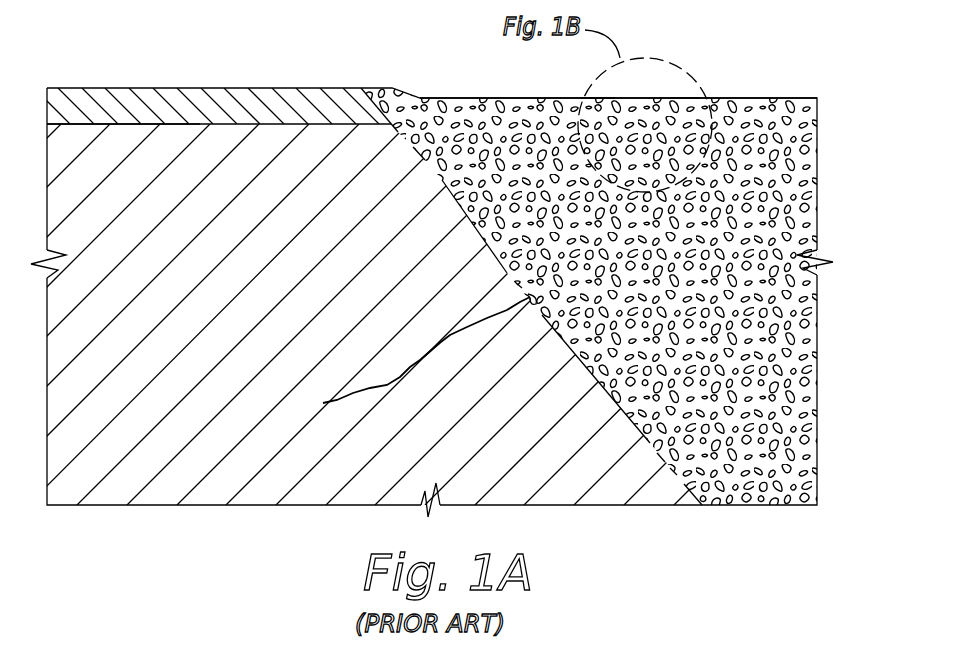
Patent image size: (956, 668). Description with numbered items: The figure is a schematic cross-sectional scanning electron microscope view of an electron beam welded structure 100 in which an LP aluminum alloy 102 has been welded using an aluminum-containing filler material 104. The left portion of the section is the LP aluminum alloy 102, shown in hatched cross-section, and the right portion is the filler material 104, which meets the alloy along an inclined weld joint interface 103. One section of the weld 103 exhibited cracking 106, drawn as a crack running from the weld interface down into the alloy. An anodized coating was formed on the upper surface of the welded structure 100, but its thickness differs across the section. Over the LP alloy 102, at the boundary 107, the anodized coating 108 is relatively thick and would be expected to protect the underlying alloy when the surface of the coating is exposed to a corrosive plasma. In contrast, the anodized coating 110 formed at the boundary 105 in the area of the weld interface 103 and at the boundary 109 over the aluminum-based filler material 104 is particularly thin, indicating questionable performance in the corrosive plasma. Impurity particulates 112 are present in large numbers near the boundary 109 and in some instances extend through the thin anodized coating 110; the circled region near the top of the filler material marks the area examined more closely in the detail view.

The electron beam welded structure 100 is at (760, 20).
The LP aluminum alloy 102 is at (622, 488).
The weld joint interface 103 is at (458, 200).
The 4047 aluminum-containing filler material 104 is at (655, 152).
The boundary 105 is at (373, 88).
The cracking 106 is at (417, 367).
The boundary 107 is at (148, 130).
The anodized coating 108 is at (142, 88).
The boundary 109 is at (682, 98).
The anodized coating 110 is at (455, 97).
The impurity particulates 112 is at (597, 97).